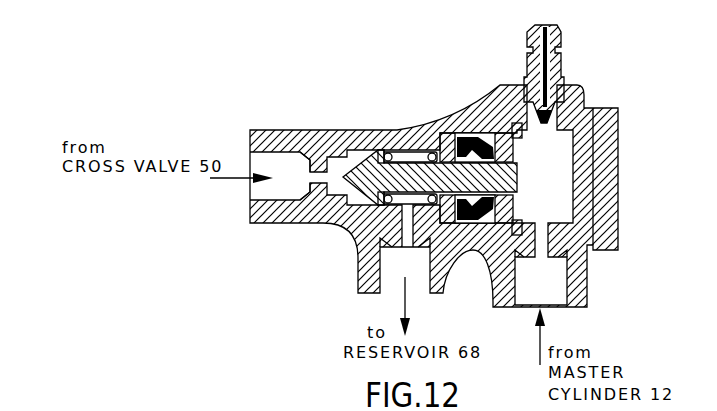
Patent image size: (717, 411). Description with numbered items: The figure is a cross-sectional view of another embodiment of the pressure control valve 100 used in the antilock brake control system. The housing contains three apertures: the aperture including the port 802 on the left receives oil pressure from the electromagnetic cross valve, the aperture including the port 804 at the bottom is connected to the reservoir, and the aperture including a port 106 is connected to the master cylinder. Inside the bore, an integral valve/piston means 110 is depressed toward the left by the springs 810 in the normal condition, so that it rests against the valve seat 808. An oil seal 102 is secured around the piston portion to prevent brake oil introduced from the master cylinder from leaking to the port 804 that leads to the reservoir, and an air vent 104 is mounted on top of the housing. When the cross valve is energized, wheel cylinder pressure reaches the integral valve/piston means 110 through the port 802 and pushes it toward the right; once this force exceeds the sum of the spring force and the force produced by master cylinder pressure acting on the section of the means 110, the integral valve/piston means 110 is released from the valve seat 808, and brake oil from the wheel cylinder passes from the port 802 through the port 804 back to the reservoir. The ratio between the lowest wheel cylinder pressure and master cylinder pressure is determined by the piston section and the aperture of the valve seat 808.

The pressure control valve 100 is at (451, 163).
The oil seal 102 is at (468, 133).
The air vent 104 is at (563, 52).
The port 106 is at (584, 253).
The integral valve/piston means 110 is at (300, 240).
The port 802 is at (310, 172).
The port 804 is at (358, 246).
The valve seat 808 is at (356, 154).
The springs 810 is at (398, 152).